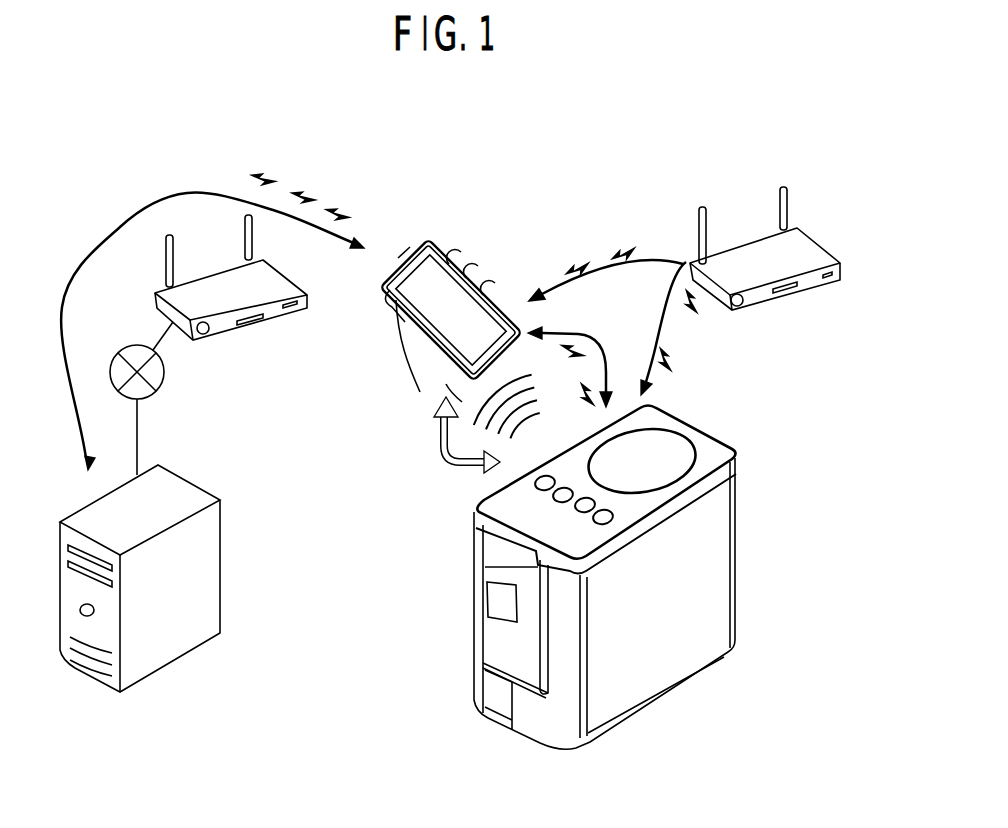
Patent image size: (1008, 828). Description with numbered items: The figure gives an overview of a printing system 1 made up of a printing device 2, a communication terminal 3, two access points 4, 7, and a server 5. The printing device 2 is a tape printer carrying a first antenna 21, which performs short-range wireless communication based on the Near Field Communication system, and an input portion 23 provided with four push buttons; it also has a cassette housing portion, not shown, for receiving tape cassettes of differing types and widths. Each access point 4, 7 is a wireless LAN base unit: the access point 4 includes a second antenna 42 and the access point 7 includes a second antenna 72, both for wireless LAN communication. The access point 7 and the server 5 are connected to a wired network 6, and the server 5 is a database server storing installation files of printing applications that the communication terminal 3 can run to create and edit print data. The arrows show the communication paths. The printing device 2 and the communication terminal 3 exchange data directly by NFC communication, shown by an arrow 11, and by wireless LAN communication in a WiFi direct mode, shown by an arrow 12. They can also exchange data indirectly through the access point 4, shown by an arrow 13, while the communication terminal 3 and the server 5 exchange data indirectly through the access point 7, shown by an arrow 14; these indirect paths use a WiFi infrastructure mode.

The printing system 1 is at (676, 152).
The printing device 2 is at (683, 584).
The communication terminal 3 is at (408, 257).
The access point 4 is at (790, 253).
The server 5 is at (163, 490).
The wired network 6 is at (112, 363).
The access point 7 is at (198, 293).
The arrow 11 is at (447, 468).
The arrow 12 is at (588, 335).
The arrow 13 is at (665, 342).
The arrow 14 is at (122, 224).
The first antenna 21 is at (642, 461).
The input portion 23 is at (530, 526).
The second antenna 42 is at (698, 213).
The second antenna 72 is at (165, 247).